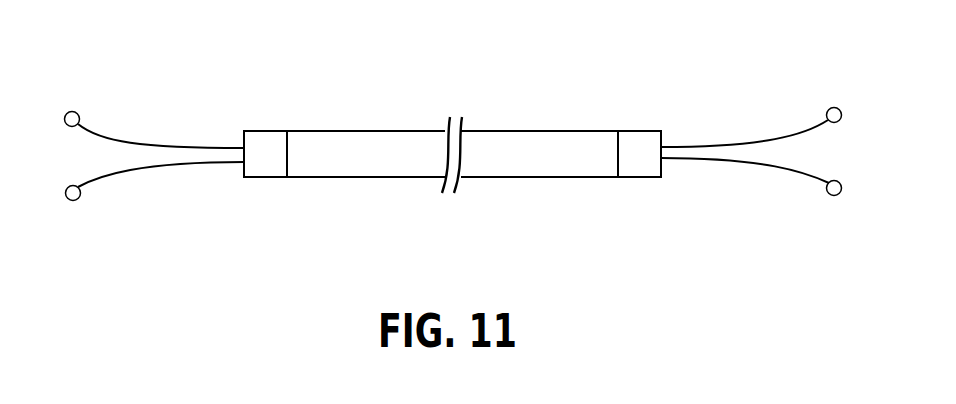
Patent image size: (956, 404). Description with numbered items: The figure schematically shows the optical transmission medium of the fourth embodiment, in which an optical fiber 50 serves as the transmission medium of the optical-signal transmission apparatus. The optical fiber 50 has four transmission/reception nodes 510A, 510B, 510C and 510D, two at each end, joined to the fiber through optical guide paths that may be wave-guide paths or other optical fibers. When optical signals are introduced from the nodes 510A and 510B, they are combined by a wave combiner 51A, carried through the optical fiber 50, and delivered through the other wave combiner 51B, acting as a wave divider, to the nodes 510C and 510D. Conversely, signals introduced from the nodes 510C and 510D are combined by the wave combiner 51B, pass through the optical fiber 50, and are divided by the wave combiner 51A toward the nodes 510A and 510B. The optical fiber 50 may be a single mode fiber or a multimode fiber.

The optical fiber 50 is at (465, 85).
The wave combiner 51A is at (262, 131).
The wave combiner (wave divider) 51B is at (642, 129).
The transmission/reception node 510A is at (74, 111).
The transmission/reception node 510B is at (71, 201).
The transmission/reception node 510C is at (837, 107).
The transmission/reception node 510D is at (833, 196).